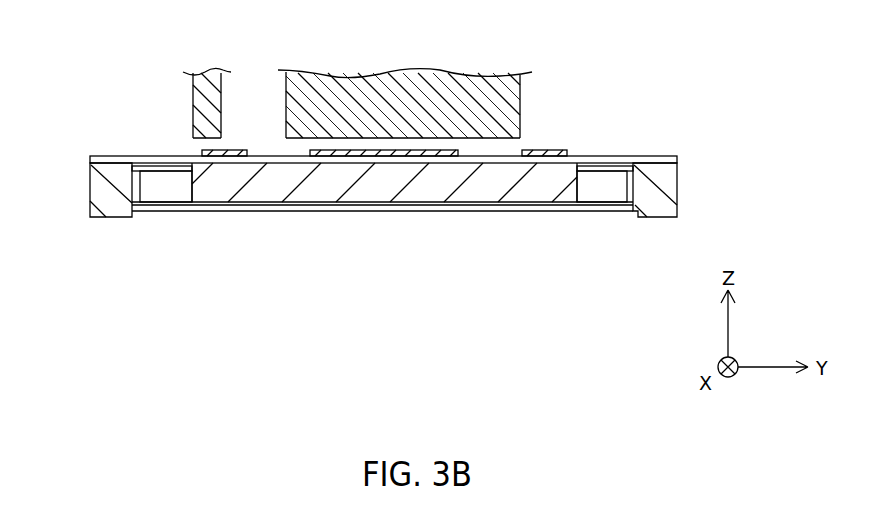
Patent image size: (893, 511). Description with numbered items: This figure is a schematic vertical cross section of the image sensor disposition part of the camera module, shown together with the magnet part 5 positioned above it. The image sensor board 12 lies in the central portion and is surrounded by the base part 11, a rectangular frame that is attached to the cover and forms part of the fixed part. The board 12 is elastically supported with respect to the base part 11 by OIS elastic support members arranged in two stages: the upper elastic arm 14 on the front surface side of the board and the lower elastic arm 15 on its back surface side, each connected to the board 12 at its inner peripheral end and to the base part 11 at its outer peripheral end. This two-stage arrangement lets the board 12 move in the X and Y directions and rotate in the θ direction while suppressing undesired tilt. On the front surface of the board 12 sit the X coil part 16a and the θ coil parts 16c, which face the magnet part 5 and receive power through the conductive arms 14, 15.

The magnet part 5 is at (206, 80).
The base part 11 is at (90, 192).
The image sensor board 12 is at (532, 192).
The upper elastic arm 14 is at (163, 158).
The lower elastic arm 15 is at (165, 210).
The X coil part 16a is at (383, 160).
The θ coil part 16c is at (541, 156).